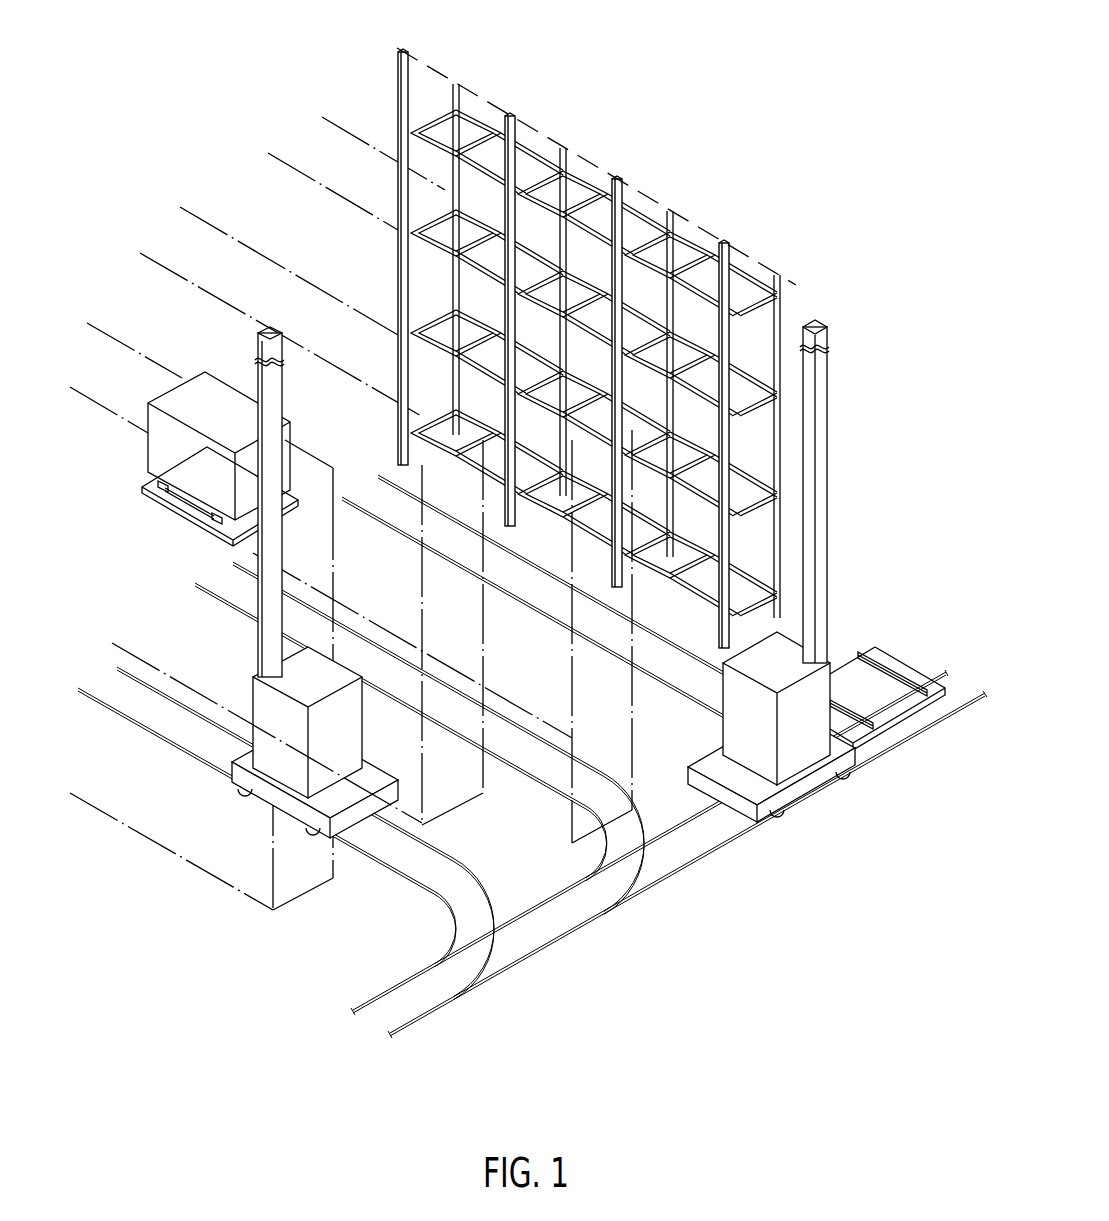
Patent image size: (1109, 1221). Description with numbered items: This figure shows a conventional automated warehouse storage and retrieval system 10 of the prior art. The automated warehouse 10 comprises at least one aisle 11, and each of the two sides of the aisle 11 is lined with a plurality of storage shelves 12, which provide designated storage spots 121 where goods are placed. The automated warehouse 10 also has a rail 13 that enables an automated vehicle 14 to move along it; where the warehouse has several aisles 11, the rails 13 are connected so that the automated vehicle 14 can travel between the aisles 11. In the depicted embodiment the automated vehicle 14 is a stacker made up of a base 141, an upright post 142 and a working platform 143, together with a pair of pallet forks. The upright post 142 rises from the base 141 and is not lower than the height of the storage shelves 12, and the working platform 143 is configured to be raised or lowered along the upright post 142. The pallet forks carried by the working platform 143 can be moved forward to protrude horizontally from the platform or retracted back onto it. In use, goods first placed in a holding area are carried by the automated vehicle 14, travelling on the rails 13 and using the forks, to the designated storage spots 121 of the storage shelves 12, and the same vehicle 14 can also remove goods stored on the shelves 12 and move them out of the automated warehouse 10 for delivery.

The automated warehouse storage and retrieval system 10 is at (526, 527).
The aisle 11 is at (385, 100).
The storage shelves 12 is at (310, 303).
The storage spots 121 is at (585, 160).
The rail 13 is at (412, 536).
The automated vehicle 14 is at (515, 579).
The base 141 is at (707, 767).
The upright post 142 is at (277, 392).
The working platform 143 is at (157, 507).